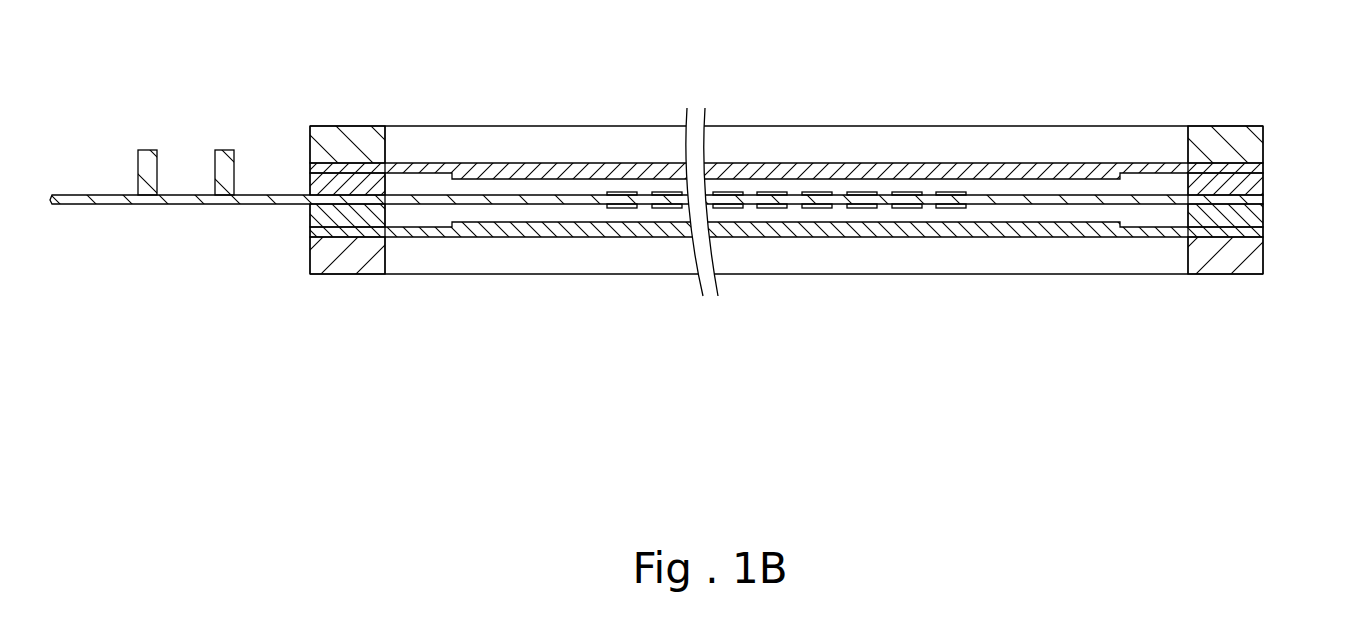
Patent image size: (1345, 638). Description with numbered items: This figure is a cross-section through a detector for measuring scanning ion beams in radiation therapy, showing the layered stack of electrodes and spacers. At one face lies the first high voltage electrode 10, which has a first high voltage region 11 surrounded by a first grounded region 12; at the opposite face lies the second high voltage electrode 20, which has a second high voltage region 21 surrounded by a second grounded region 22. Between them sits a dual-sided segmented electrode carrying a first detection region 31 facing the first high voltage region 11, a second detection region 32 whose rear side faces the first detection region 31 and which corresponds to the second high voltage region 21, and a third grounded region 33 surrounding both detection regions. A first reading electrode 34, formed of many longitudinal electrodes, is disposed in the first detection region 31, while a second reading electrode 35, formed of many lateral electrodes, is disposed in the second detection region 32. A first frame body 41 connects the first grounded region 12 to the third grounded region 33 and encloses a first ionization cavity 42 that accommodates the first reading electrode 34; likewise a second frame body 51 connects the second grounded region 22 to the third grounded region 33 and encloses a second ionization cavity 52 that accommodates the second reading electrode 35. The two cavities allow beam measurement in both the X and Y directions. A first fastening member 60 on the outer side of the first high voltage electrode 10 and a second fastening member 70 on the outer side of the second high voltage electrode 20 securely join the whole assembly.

The first high voltage electrode 10 is at (433, 55).
The first high voltage region 11 is at (417, 172).
The first grounded region 12 is at (340, 167).
The second high voltage electrode 20 is at (1257, 390).
The second high voltage region 21 is at (1095, 222).
The second grounded region 22 is at (1233, 233).
The first detection region 31 is at (514, 190).
The second detection region 32 is at (485, 206).
The third grounded region 33 is at (350, 199).
The first reading electrode 34 is at (619, 193).
The second reading electrode 35 is at (620, 208).
The first frame body 41 is at (317, 185).
The first ionization cavity 42 is at (1018, 188).
The second frame body 51 is at (1245, 215).
The second ionization cavity 52 is at (1031, 212).
The first fastening member 60 is at (1232, 135).
The second fastening member 70 is at (343, 252).